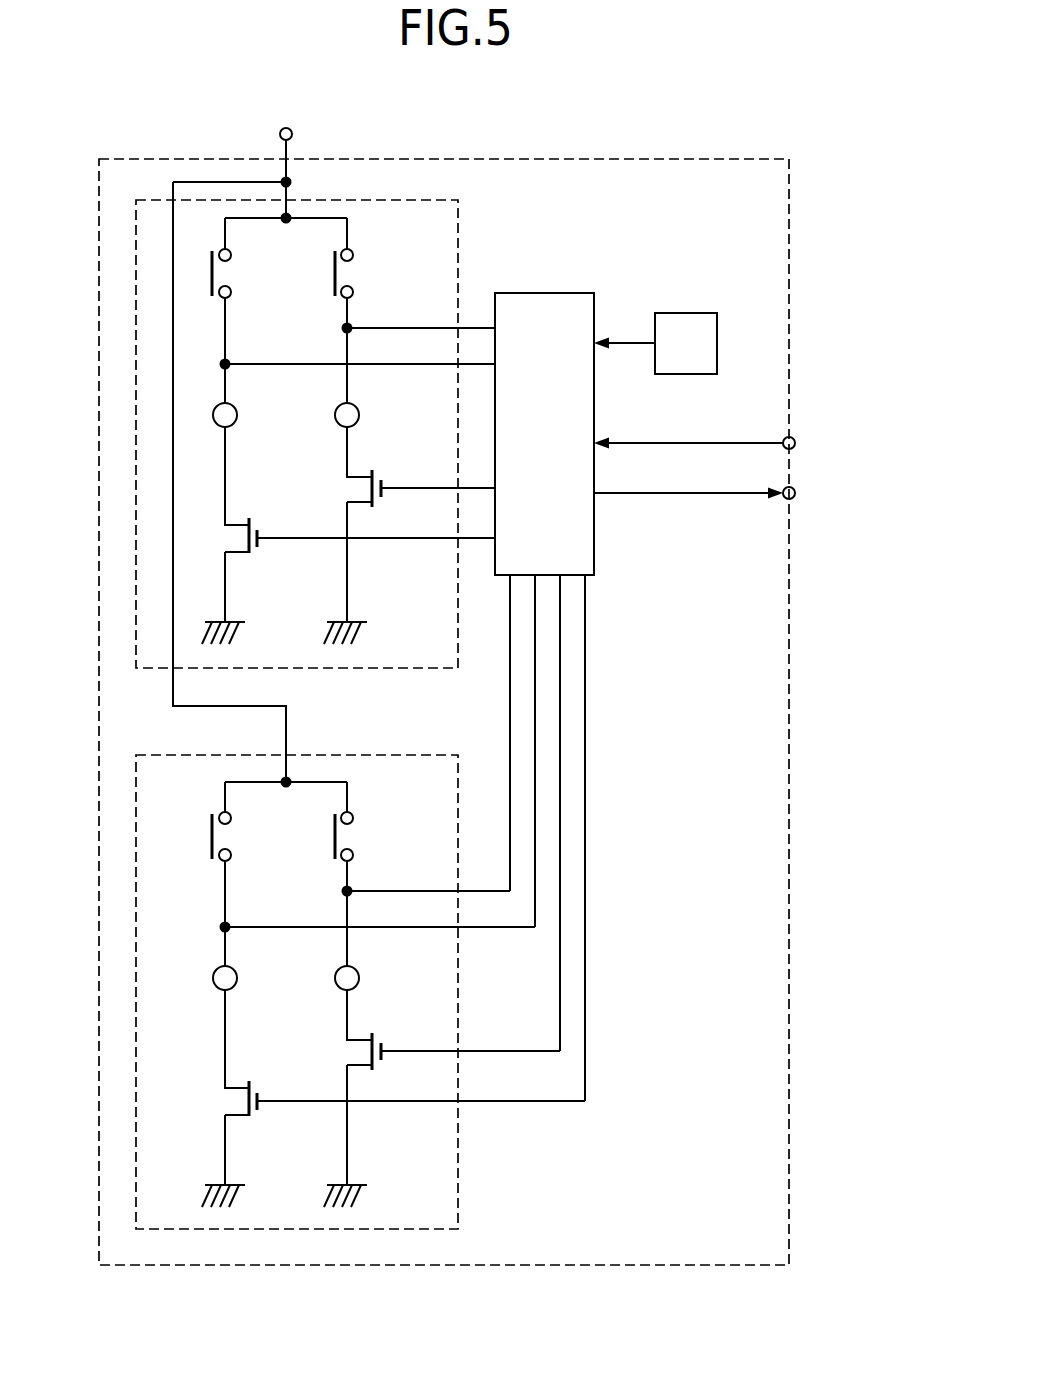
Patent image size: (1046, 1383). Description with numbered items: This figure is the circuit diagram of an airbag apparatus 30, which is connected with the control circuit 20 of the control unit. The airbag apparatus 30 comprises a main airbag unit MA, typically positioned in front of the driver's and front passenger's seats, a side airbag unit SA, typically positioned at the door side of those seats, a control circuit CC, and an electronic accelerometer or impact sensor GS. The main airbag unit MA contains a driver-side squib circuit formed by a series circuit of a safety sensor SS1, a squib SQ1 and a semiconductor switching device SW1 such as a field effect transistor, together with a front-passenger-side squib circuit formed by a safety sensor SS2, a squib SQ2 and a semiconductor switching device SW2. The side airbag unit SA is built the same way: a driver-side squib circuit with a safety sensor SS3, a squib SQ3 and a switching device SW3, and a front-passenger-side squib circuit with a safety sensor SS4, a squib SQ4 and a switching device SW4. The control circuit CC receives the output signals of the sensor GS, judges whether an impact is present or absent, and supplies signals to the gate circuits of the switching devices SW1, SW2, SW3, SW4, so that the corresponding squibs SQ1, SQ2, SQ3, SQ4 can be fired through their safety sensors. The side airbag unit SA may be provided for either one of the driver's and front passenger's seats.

The airbag apparatus 30 is at (680, 159).
The main airbag unit MA is at (136, 510).
The side airbag unit SA is at (136, 858).
The safety sensor SS1 is at (232, 274).
The safety sensor SS2 is at (355, 274).
The safety sensor SS3 is at (232, 837).
The safety sensor SS4 is at (355, 837).
The squib SQ1 is at (237, 418).
The squib SQ2 is at (359, 418).
The squib SQ3 is at (237, 981).
The squib SQ4 is at (359, 981).
The semiconductor switching device SW1 is at (252, 556).
The semiconductor switching device SW2 is at (352, 489).
The semiconductor switching device SW3 is at (252, 1119).
The semiconductor switching device SW4 is at (352, 1052).
The control circuit CC is at (553, 293).
The electronic accelerometer GS is at (690, 313).
The control circuit 20 is at (738, 494).